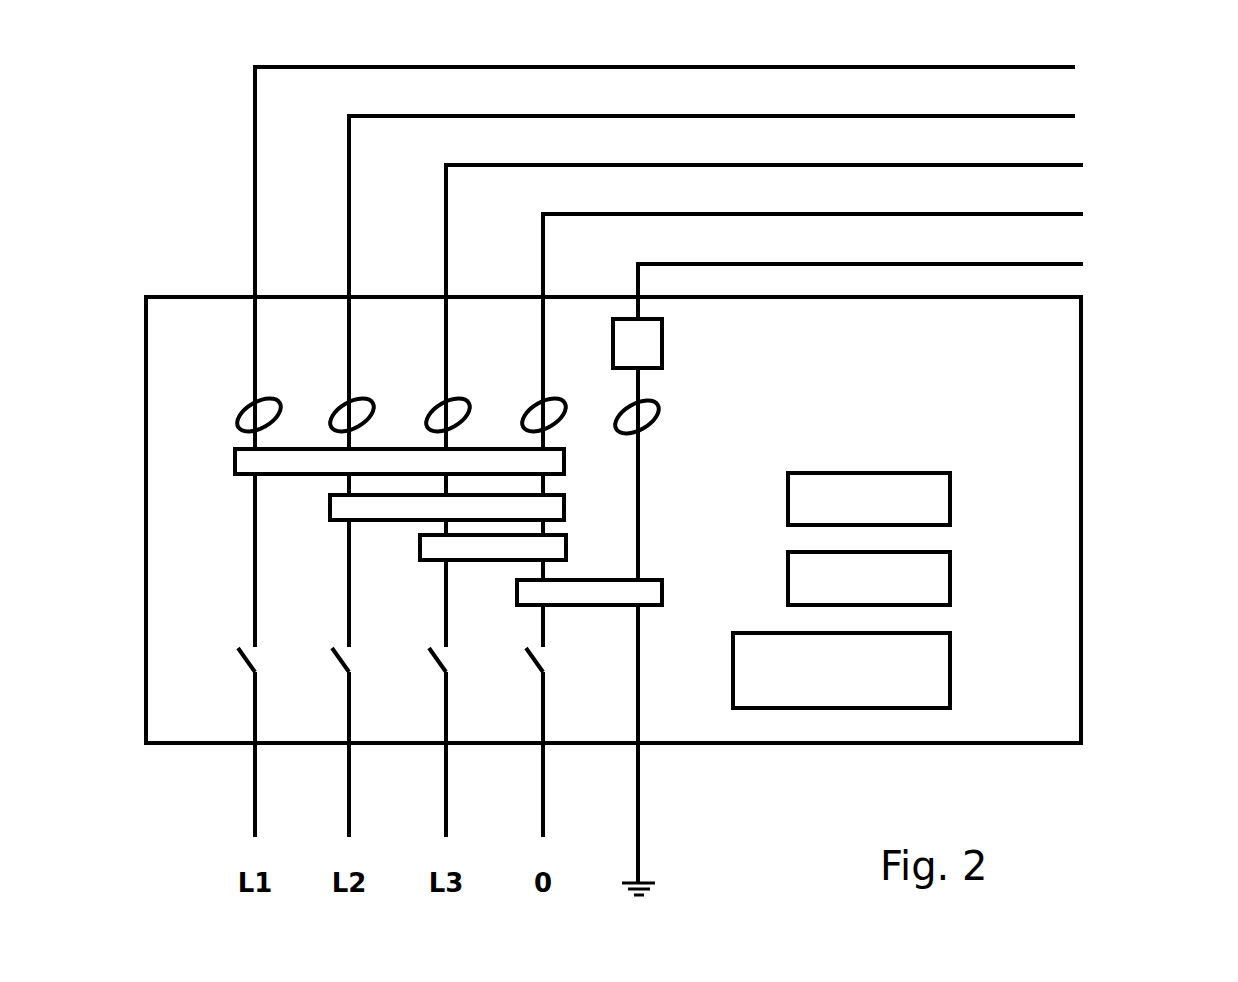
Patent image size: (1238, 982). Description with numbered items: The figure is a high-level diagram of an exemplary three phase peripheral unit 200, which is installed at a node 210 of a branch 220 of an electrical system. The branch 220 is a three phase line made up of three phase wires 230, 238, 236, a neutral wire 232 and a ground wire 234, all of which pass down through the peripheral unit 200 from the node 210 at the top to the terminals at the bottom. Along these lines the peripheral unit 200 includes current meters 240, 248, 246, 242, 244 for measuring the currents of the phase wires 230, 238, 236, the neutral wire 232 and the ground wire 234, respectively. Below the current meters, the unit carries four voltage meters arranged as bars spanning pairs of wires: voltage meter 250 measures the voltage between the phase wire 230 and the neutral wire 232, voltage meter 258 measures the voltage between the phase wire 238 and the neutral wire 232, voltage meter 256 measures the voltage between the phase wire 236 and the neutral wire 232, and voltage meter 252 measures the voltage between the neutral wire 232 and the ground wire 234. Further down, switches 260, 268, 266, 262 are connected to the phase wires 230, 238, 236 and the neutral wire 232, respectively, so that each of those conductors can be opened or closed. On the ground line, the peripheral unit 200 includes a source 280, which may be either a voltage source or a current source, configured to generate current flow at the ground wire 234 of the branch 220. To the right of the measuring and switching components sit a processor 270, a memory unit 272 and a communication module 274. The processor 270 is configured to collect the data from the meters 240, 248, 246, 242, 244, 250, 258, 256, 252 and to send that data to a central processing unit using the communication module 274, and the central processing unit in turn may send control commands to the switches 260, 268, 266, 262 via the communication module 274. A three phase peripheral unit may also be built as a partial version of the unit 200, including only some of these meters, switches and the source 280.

The three phase peripheral unit 200 is at (1083, 393).
The node 210 is at (235, 165).
The branch 220 is at (1103, 60).
The phase wire 230 is at (253, 792).
The neutral wire 232 is at (545, 792).
The ground wire 234 is at (640, 792).
The phase wire 236 is at (448, 792).
The phase wire 238 is at (352, 792).
The current meter 240 is at (247, 410).
The current meter 242 is at (530, 410).
The current meter 244 is at (662, 408).
The current meter 246 is at (428, 410).
The current meter 248 is at (333, 410).
The voltage meter 250 is at (245, 477).
The voltage meter 252 is at (665, 589).
The voltage meter 256 is at (428, 562).
The voltage meter 258 is at (340, 522).
The switch 260 is at (247, 667).
The switch 262 is at (533, 667).
The switch 266 is at (438, 667).
The switch 268 is at (341, 667).
The processor 270 is at (952, 577).
The memory unit 272 is at (873, 472).
The communication module 274 is at (952, 668).
The source 280 is at (664, 343).